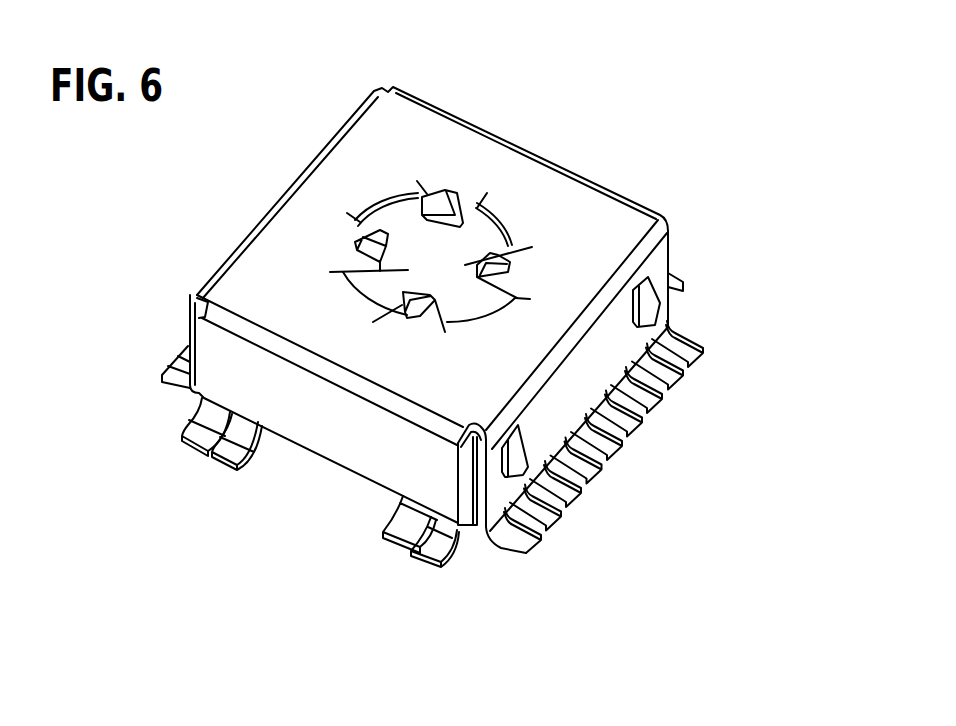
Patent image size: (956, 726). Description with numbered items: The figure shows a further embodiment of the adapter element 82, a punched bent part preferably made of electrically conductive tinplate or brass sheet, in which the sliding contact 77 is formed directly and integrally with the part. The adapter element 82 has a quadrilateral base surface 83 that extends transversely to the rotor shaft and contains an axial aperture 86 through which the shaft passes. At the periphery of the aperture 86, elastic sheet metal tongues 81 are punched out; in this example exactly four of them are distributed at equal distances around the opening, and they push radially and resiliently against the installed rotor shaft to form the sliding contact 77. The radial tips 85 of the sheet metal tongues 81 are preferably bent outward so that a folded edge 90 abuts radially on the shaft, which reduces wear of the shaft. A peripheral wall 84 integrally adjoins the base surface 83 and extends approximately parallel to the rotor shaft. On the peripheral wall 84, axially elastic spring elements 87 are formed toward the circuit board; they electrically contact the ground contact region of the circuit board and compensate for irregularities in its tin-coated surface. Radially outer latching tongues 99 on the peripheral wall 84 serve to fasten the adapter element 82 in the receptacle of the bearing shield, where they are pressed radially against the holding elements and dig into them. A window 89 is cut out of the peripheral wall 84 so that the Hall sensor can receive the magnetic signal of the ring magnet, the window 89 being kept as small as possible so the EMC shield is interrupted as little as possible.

The sliding contact 77 is at (430, 194).
The sheet metal tongues 81 is at (357, 220).
The adapter element 82 is at (505, 108).
The quadrilateral base surface 83 is at (580, 226).
The peripheral wall 84 is at (328, 420).
The radial tips 85 is at (448, 193).
The axial aperture 86 is at (347, 280).
The spring elements 87 is at (543, 510).
The window 89 is at (332, 467).
The folded edge 90 is at (480, 207).
The latching tongues 99 is at (647, 307).